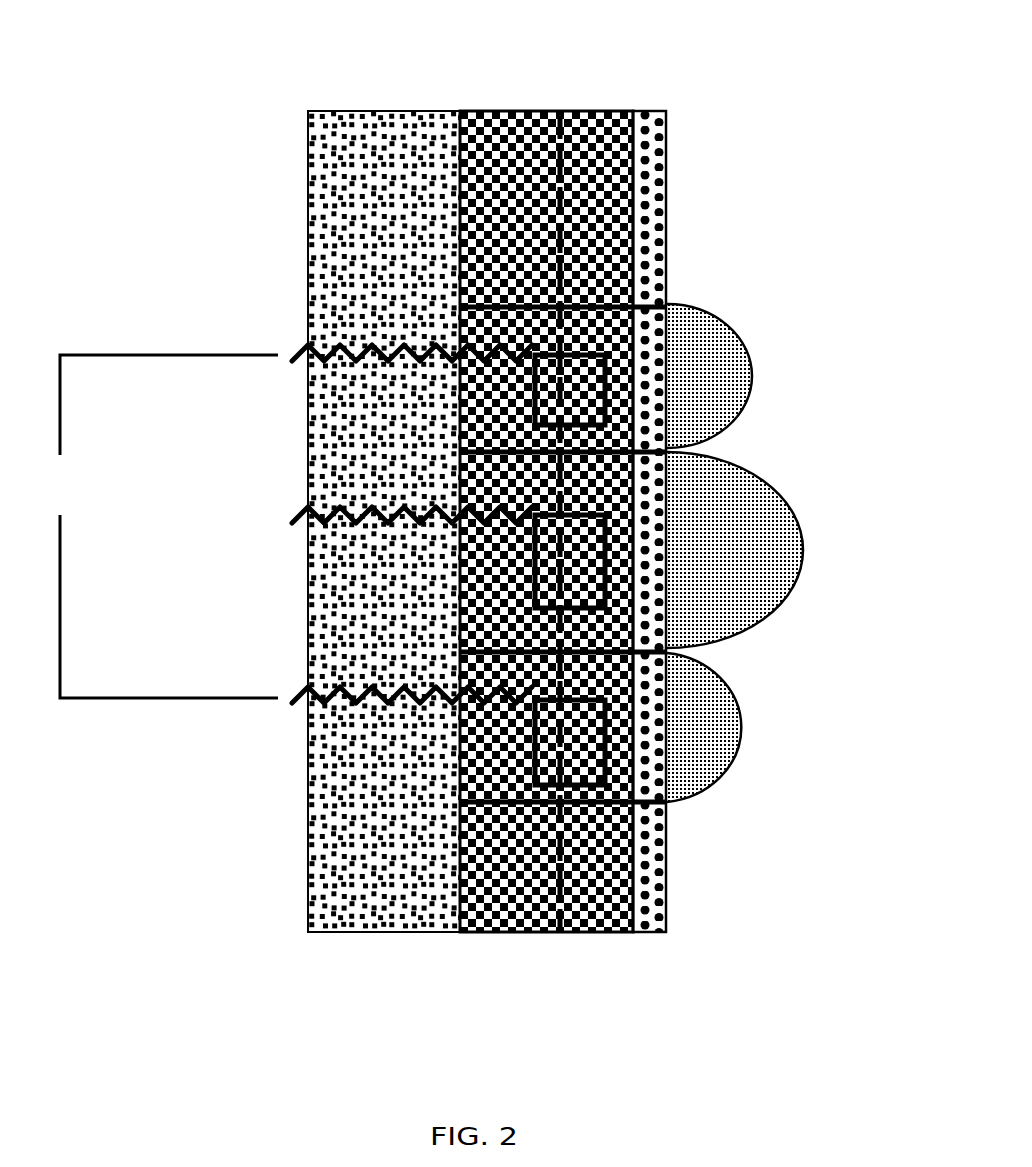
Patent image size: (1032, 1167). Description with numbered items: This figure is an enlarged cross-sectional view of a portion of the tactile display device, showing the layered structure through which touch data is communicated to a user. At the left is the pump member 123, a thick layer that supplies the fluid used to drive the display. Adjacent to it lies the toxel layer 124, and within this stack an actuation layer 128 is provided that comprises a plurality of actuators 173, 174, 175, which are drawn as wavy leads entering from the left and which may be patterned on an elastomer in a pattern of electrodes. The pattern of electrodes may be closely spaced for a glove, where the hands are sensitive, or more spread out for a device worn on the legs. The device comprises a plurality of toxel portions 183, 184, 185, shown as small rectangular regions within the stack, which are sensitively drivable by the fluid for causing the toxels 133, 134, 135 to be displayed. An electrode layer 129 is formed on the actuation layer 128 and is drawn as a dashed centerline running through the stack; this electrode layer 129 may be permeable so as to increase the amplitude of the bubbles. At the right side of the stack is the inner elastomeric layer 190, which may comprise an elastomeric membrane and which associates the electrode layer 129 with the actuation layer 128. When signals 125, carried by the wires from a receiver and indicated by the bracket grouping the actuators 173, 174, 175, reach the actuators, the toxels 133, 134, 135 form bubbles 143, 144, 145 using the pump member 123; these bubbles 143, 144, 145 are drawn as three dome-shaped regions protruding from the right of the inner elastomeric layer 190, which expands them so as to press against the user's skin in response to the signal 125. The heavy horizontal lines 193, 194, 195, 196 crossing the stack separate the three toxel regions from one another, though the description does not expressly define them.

The pump member 123 is at (365, 232).
The toxel layer 124 is at (510, 205).
The signals 125 is at (280, 520).
The actuation layer 128 is at (503, 160).
The electrode layer 129 is at (542, 150).
The toxel 133 is at (640, 355).
The toxel 134 is at (652, 540).
The toxel 135 is at (665, 748).
The bubble 143 is at (730, 385).
The bubble 144 is at (752, 583).
The bubble 145 is at (695, 762).
The actuator 173 is at (512, 352).
The actuator 174 is at (530, 515).
The actuator 175 is at (525, 700).
The toxel portion 183 is at (535, 403).
The toxel portion 184 is at (535, 558).
The toxel portion 185 is at (535, 740).
The inner elastomeric layer 190 is at (652, 130).
The first separator 193 is at (667, 302).
The second separator 194 is at (670, 452).
The third separator 195 is at (673, 652).
The fourth separator 196 is at (650, 820).